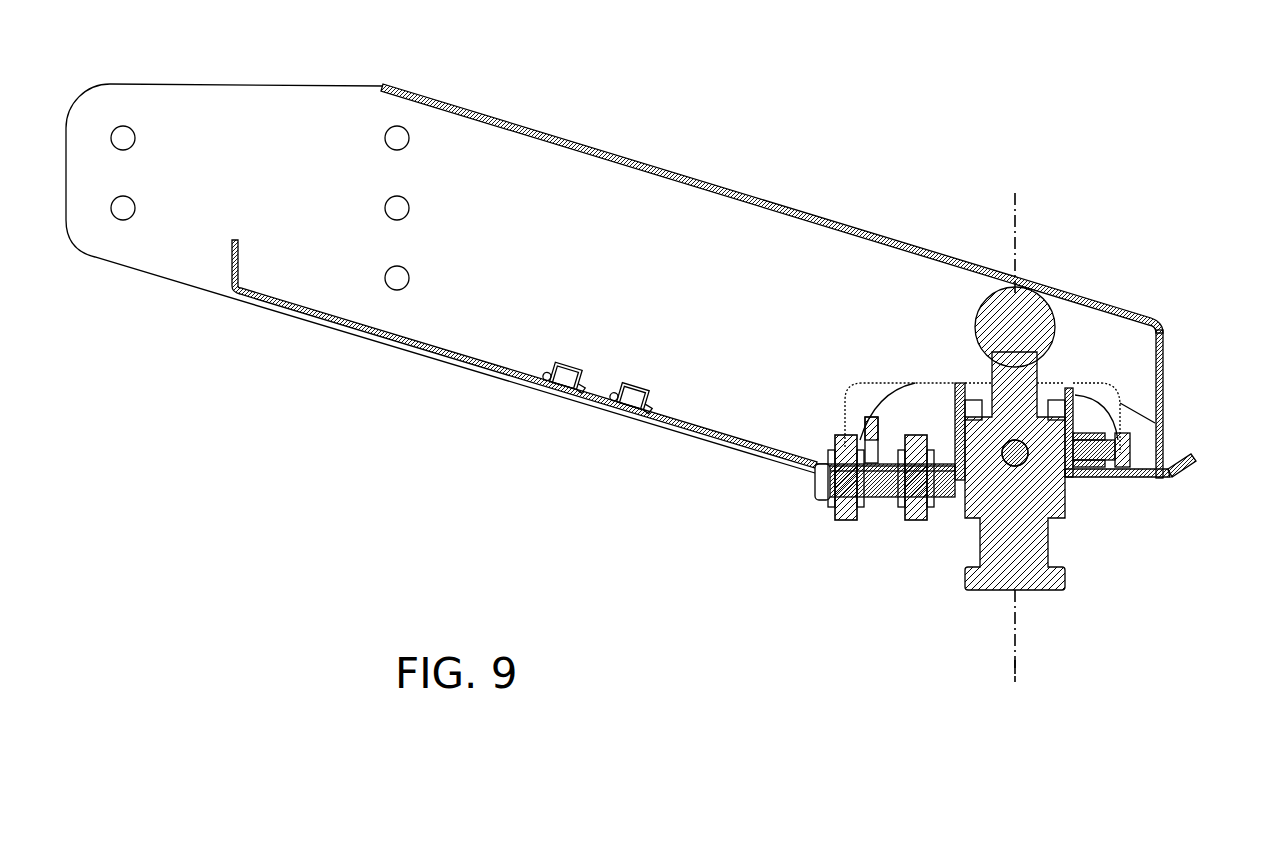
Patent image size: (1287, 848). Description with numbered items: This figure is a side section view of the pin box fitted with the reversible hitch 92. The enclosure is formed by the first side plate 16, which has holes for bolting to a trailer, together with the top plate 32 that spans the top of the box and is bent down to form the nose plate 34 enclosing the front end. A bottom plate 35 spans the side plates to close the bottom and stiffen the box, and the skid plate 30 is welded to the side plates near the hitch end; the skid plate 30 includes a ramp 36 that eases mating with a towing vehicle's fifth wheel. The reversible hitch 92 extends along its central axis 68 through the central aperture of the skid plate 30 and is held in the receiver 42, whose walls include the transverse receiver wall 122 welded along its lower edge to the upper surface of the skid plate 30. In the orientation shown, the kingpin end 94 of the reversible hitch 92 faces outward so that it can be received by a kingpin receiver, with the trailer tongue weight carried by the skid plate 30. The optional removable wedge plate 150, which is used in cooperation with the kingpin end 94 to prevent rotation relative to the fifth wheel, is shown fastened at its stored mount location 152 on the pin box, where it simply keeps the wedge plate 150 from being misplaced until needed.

The first side plate 16 is at (592, 270).
The top plate 32 is at (528, 132).
The nose plate 34 is at (1162, 357).
The skid plate 30 is at (1140, 478).
The ramp 36 is at (1190, 467).
The bottom plate 35 is at (337, 323).
The stored mount location 152 is at (577, 416).
The removable wedge plate 150 is at (817, 491).
The kingpin end 94 is at (950, 548).
The receiver 42 is at (978, 387).
The transverse receiver wall 122 is at (1070, 390).
The central axis 68 is at (1015, 621).
The reversible hitch 92 is at (1015, 686).